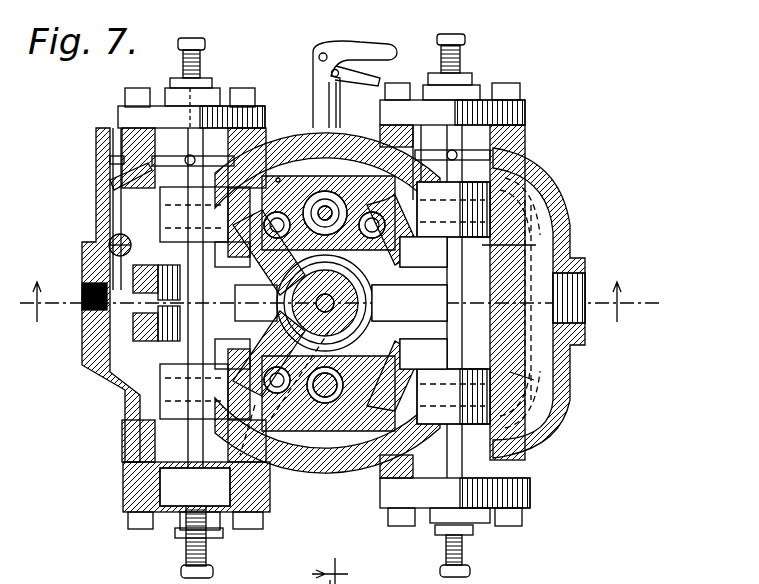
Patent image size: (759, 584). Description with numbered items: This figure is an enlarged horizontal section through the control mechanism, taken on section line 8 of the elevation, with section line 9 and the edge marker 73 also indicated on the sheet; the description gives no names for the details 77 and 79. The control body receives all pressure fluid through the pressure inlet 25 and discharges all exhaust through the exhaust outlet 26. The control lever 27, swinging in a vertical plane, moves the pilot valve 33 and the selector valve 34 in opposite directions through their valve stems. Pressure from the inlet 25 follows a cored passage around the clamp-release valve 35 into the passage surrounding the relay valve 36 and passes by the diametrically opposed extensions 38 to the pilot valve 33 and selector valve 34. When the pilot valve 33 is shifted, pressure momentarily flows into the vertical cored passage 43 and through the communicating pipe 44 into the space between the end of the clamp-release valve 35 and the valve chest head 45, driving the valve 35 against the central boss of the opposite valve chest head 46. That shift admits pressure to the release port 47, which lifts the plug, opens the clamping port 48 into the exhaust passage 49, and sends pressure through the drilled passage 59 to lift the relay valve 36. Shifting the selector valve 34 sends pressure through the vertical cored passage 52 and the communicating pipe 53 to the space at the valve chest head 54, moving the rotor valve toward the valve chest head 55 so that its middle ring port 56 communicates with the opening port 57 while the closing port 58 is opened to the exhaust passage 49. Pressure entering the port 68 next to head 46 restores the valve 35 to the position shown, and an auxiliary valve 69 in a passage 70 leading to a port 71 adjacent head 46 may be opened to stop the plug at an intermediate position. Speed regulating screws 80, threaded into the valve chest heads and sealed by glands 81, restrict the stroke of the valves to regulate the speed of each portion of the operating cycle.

The section line 8- 8 is at (332, 302).
The section line 9- 9 is at (330, 563).
The pressure inlet 25 is at (82, 325).
The exhaust outlet 26 is at (586, 285).
The control lever 27 is at (312, 82).
The pilot valve 33 is at (322, 405).
The selector valve 34 is at (325, 200).
The clamp-release valve 35 is at (172, 202).
The relay valve 36 is at (296, 298).
The diametrically opposed extensions 38 is at (324, 301).
The vertical cored passage 43 is at (290, 405).
The communicating pipe 44 is at (270, 410).
The valve chest head 45 is at (122, 498).
The valve chest head 46 is at (120, 110).
The release port 47 is at (125, 378).
The clamping port 48 is at (168, 270).
The exhaust passage 49 is at (312, 311).
The vertical cored passage 52 is at (380, 200).
The communicating pipe 53 is at (548, 412).
The valve chest head 54 is at (531, 494).
The valve chest head 55 is at (527, 108).
The middle ring port 56 is at (341, 303).
The opening port 57 is at (532, 381).
The closing port 58 is at (441, 253).
The drilled passage 59 is at (300, 312).
The port 68 is at (193, 171).
The auxiliary valve 69 is at (108, 246).
The passage 70 is at (97, 160).
The port 71 is at (97, 185).
The section line 73 is at (391, 581).
The bearing sleeve 77 is at (330, 252).
The ball bearing 79 is at (468, 172).
The speed regulating screws 80 is at (182, 60).
The glands 81 is at (210, 80).